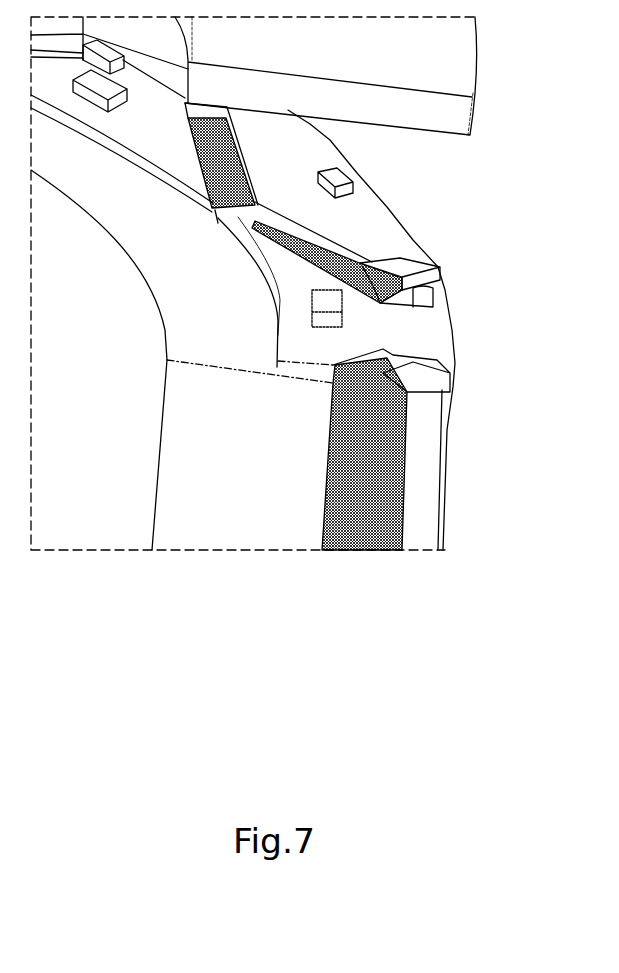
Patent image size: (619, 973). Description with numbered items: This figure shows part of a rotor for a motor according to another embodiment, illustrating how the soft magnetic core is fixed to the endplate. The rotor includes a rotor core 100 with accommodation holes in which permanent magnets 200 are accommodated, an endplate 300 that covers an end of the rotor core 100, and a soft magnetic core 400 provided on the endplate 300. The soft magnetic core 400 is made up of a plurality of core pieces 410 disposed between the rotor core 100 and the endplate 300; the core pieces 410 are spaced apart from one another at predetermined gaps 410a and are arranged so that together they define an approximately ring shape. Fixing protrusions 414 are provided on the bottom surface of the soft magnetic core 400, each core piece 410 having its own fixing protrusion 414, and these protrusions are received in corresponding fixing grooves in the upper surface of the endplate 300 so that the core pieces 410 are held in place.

The rotor core 100 is at (430, 493).
The permanent magnets 200 is at (387, 430).
The endplate 300 is at (457, 50).
The soft magnetic core 400 is at (401, 212).
The core piece 410 is at (383, 208).
The gap 410a is at (443, 283).
The fixing protrusion 414 is at (337, 172).